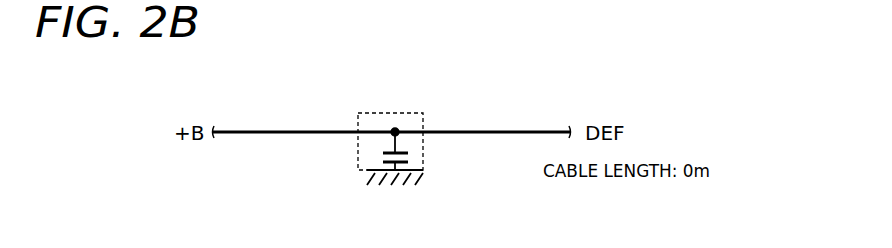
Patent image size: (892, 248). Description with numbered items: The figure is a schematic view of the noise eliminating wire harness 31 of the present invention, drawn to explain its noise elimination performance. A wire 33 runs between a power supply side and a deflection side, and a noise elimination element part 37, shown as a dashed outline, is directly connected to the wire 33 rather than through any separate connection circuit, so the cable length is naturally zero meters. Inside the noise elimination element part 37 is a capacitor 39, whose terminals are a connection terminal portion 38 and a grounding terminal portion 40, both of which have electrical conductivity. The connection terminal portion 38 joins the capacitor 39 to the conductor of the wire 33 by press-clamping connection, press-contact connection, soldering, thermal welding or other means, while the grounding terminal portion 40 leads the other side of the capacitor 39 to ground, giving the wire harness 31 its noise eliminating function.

The wire harness 31 is at (304, 124).
The wire 33 is at (483, 131).
The noise elimination element part 37 is at (383, 113).
The connection terminal portion 38 is at (393, 145).
The capacitor 39 is at (410, 156).
The grounding terminal portion 40 is at (413, 179).